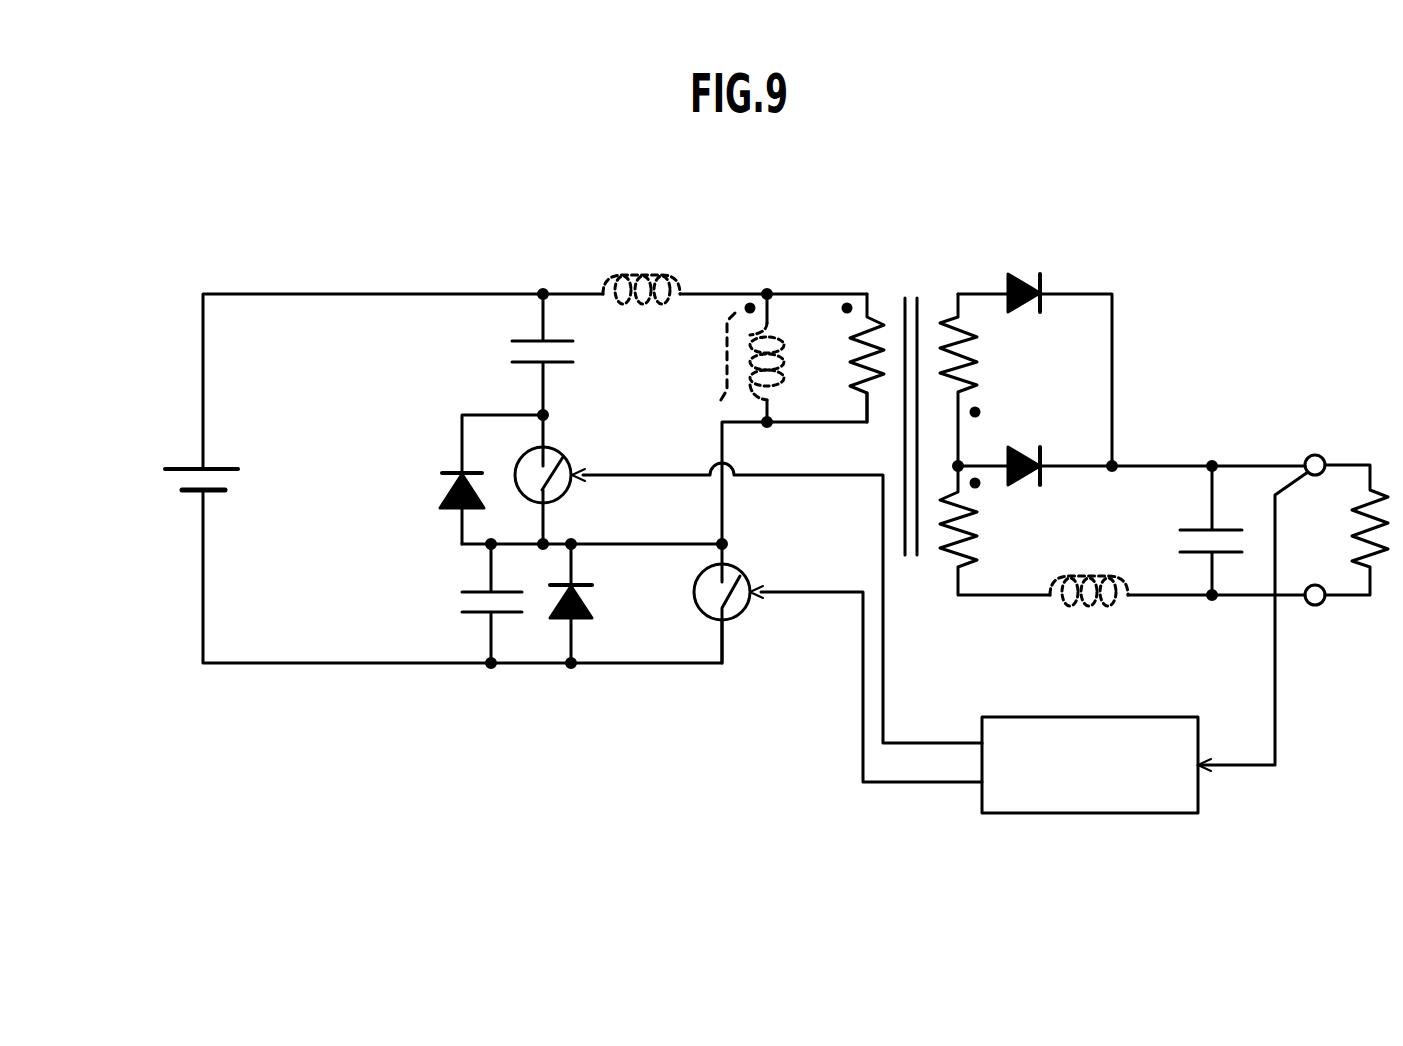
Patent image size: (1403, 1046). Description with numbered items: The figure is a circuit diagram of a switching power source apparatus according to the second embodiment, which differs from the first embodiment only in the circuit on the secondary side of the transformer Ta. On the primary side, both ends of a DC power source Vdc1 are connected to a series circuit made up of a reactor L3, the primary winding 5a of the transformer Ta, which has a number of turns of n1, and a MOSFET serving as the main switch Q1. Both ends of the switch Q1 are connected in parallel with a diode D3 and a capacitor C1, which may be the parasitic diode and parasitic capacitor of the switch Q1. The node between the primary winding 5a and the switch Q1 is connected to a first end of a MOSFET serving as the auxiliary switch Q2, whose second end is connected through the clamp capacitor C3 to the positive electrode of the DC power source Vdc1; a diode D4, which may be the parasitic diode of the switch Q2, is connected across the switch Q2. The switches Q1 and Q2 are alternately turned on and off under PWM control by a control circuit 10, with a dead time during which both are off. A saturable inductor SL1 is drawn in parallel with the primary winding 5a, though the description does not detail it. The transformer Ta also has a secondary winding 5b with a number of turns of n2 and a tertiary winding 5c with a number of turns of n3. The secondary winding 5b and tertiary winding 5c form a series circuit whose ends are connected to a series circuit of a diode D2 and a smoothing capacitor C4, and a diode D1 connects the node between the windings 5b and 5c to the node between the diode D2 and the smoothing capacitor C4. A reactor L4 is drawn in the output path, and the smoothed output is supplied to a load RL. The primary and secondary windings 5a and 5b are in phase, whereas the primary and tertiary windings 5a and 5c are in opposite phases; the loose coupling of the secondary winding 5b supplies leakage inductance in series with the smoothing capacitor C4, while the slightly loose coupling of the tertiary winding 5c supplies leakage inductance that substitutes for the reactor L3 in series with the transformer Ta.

The DC power source Vdc1 is at (169, 488).
The clamp capacitor C3 is at (521, 355).
The reactor L3 is at (641, 269).
The saturable inductor SL1 is at (727, 358).
The number of turns of primary winding n1 is at (848, 358).
The primary winding 5a is at (847, 320).
The transformer Ta is at (907, 409).
The number of turns of tertiary winding n3 is at (980, 380).
The tertiary winding 5c is at (977, 322).
The diode D2 is at (1035, 350).
The diode D1 is at (1130, 445).
The number of turns of secondary winding n2 is at (995, 530).
The secondary winding 5b is at (988, 550).
The smoothing inductor L4 is at (1177, 571).
The smoothing capacitor C4 is at (1189, 531).
The load resistor RL is at (1346, 530).
The switch Q2 is at (748, 579).
The diode D4 is at (469, 479).
The capacitor C1 is at (471, 604).
The diode D3 is at (590, 604).
The switch Q1 is at (838, 661).
The control circuit 10 is at (1083, 815).